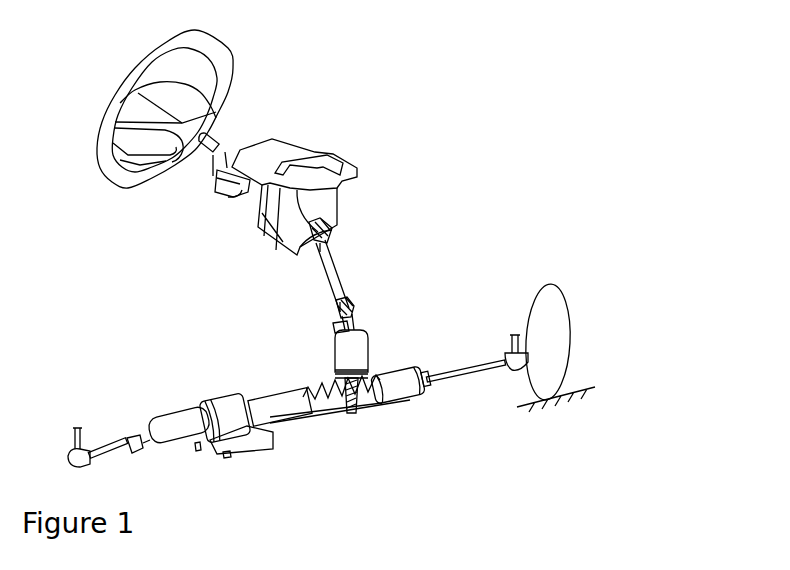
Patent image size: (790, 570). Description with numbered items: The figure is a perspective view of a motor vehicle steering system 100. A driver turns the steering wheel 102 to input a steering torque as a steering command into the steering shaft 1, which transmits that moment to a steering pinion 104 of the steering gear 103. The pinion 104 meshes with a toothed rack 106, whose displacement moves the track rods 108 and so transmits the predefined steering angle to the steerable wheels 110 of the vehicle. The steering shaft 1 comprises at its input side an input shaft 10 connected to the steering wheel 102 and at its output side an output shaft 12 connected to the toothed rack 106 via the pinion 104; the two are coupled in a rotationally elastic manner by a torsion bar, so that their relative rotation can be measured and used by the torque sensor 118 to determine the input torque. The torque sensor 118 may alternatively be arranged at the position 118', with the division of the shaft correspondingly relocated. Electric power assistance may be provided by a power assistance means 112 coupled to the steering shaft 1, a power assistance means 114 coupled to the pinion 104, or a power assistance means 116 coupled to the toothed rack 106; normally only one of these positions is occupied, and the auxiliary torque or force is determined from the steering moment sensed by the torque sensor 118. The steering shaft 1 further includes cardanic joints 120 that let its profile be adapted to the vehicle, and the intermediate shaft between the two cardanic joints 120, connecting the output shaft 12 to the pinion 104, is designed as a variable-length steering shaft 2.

The motor vehicle steering system 100 is at (408, 56).
The steering wheel 102 is at (225, 55).
The steering shaft 1 is at (214, 138).
The input shaft 10 is at (227, 142).
The power assistance means 112 is at (345, 188).
The output shaft 12 is at (337, 217).
The cardanic joint 120 is at (334, 230).
The torque sensor 118 is at (162, 210).
The alternative torque sensor position 118' is at (228, 333).
The variable-length steering shaft 2 is at (340, 270).
The power assistance means 114 is at (358, 354).
The steering pinion 104 is at (351, 414).
The steering gear 103 is at (316, 373).
The toothed rack 106 is at (306, 419).
The power assistance means 116 is at (232, 410).
The track rods 108 is at (127, 452).
The steerable wheels 110 is at (548, 288).